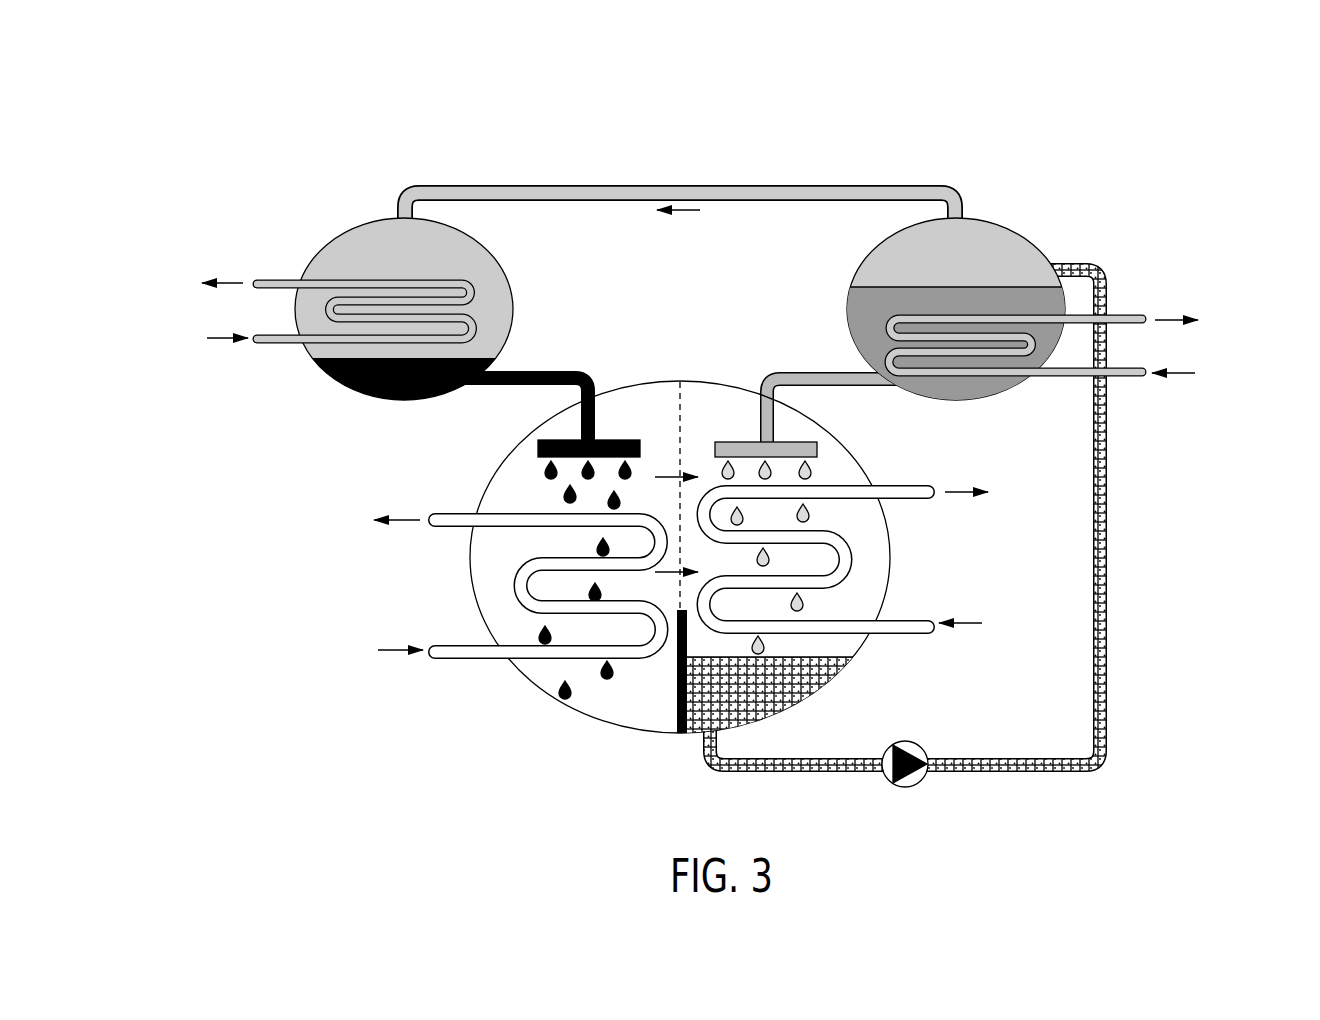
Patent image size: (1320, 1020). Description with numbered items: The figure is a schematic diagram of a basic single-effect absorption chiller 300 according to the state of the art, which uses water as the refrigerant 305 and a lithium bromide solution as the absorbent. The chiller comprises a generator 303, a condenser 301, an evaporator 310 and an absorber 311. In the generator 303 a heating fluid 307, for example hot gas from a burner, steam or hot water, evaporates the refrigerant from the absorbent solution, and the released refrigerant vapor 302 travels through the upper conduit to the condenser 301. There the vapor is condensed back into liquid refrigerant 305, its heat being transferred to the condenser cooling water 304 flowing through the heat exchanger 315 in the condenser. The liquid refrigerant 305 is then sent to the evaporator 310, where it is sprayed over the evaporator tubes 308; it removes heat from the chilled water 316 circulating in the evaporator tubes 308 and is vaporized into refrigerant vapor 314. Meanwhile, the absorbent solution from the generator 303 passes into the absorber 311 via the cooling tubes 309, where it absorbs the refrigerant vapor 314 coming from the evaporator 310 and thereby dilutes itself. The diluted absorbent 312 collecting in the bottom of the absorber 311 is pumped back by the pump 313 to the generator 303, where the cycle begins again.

The absorption chiller 300 is at (373, 109).
The condenser 301 is at (366, 212).
The refrigerant vapor 302 is at (637, 176).
The generator 303 is at (1012, 211).
The condenser cooling water 304 is at (203, 315).
The refrigerant 305 is at (348, 396).
The heating fluid 307 is at (1202, 346).
The evaporator tubes 308 is at (562, 664).
The cooling tubes 309 is at (799, 623).
The evaporator 310 is at (625, 374).
The absorber 311 is at (742, 378).
The diluted absorbent 312 is at (747, 699).
The pump 313 is at (932, 786).
The refrigerant vapor 314 is at (668, 588).
The heat exchanger 315 is at (338, 269).
The chilled water 316 is at (384, 633).